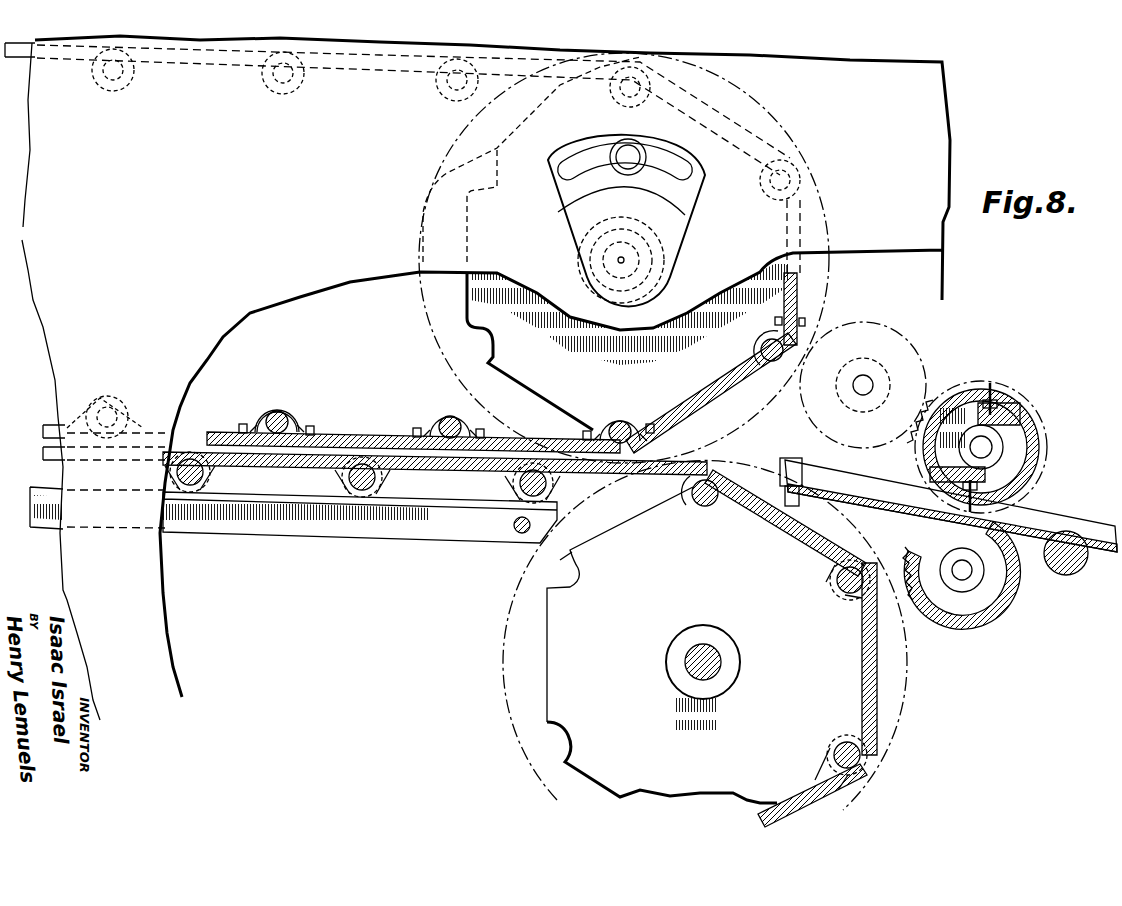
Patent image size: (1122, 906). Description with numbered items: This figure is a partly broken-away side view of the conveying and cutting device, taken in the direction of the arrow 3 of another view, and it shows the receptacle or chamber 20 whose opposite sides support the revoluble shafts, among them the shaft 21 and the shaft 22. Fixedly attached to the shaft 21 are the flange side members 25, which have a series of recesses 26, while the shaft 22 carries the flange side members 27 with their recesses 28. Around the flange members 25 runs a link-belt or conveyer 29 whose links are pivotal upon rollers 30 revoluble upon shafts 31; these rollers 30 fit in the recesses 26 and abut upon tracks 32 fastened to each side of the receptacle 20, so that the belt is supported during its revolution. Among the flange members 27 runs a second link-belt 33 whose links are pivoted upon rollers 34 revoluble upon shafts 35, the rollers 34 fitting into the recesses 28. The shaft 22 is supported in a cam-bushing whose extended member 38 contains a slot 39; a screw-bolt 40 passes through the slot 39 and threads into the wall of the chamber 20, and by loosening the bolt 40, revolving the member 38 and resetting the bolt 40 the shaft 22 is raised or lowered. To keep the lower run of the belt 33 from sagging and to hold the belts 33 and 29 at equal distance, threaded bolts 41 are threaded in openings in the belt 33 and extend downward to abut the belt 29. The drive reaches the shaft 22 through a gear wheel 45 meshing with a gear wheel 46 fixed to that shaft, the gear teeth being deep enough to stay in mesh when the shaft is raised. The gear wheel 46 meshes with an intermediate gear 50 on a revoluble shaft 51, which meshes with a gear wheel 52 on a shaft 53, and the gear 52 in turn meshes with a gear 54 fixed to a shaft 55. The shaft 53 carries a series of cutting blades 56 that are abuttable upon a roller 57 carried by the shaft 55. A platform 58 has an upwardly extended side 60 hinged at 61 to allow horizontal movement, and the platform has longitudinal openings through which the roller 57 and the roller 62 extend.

The shaft 3 is at (653, 263).
The receptacle 20 is at (477, 378).
The revoluble shaft 21 is at (722, 661).
The revoluble shaft 22 is at (636, 258).
The flange side member 25 is at (570, 632).
The recess 26 is at (568, 551).
The flange side member 27 is at (477, 220).
The recess 28 is at (457, 167).
The link-belt 29 is at (283, 466).
The roller 30 is at (340, 488).
The shaft 31 is at (362, 490).
The track 32 is at (418, 525).
The link-belt 33 is at (357, 434).
The roller 34 is at (290, 418).
The shaft 35 is at (281, 401).
The extended member 38 is at (690, 190).
The slot 39 is at (680, 165).
The screw-bolt 40 is at (634, 147).
The threaded bolt 41 is at (316, 428).
The gear wheel 45 is at (905, 692).
The gear wheel 46 is at (822, 202).
The intermediate gear 50 is at (915, 345).
The revoluble shaft 51 is at (868, 385).
The gear wheel 52 is at (975, 385).
The revoluble shaft 53 is at (990, 440).
The gear 54 is at (905, 565).
The revoluble shaft 55 is at (977, 580).
The cutting blade 56 is at (1002, 383).
The roller 57 is at (1002, 612).
The platform 58 is at (798, 497).
The upwardly extended side 60 is at (840, 483).
The hinge 61 is at (793, 457).
The roller 62 is at (1077, 568).